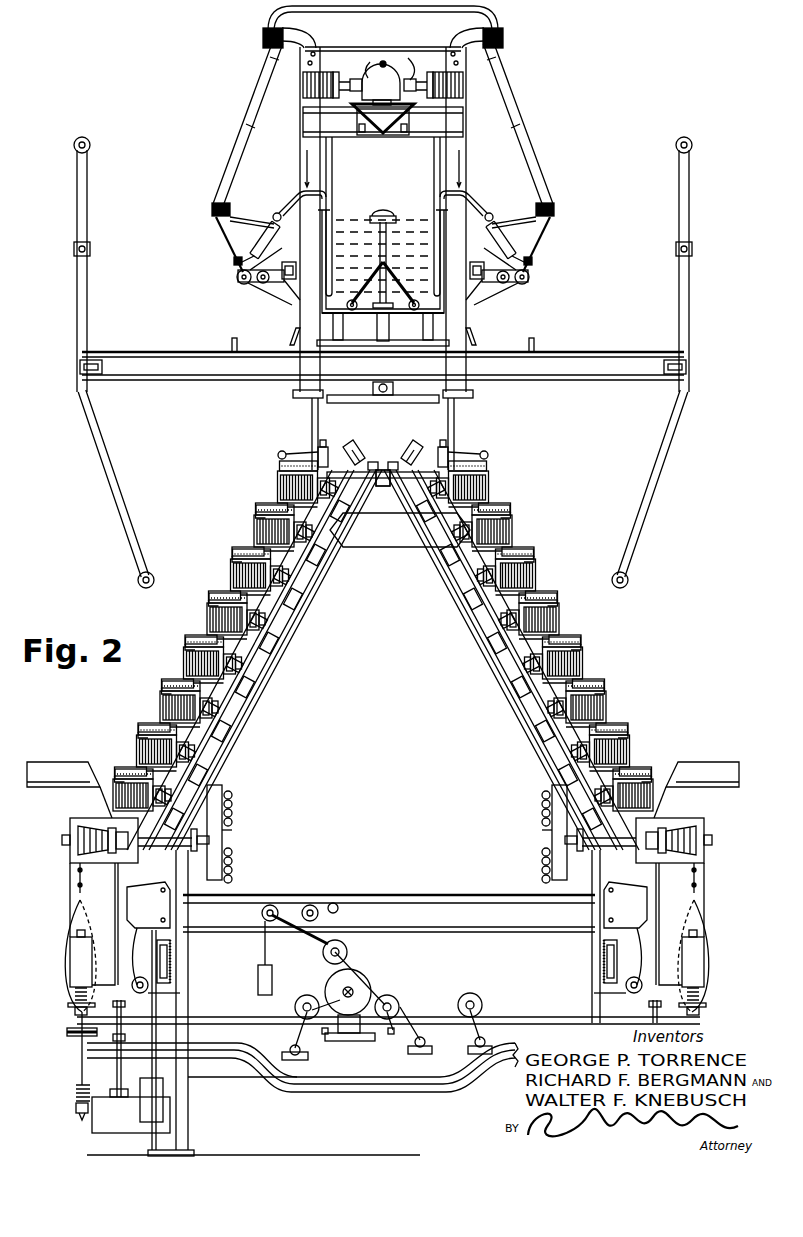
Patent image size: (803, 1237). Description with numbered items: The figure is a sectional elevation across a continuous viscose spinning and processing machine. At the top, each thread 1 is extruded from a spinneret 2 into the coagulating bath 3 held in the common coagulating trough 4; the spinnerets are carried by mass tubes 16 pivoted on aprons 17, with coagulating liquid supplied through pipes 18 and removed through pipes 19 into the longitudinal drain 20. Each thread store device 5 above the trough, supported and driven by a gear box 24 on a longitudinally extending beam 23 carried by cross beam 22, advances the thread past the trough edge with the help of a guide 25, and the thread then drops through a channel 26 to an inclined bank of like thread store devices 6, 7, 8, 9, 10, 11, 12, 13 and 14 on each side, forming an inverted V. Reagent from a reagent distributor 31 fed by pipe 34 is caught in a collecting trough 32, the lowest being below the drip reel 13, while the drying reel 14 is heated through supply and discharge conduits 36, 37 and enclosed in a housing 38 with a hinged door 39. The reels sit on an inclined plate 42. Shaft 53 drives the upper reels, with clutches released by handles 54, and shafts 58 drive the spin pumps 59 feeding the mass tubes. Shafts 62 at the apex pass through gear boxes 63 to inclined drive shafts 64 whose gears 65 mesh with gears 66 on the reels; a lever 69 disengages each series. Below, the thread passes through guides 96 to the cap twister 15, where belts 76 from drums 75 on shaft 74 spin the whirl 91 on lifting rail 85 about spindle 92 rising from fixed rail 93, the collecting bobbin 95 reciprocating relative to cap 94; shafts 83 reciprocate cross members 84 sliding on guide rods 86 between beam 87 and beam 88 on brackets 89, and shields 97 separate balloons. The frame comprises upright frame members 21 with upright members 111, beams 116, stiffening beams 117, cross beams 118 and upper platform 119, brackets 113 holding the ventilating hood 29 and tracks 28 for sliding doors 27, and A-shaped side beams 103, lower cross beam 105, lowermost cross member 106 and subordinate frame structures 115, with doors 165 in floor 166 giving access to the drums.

The thread 1 is at (707, 935).
The spinneret 2 is at (432, 290).
The coagulating bath 3 is at (350, 226).
The coagulating trough 4 is at (324, 310).
The thread store device 5 is at (463, 84).
The thread store device 6 is at (488, 488).
The thread store device 7 is at (512, 528).
The thread store device 8 is at (536, 572).
The thread store device 9 is at (558, 615).
The thread store device 10 is at (582, 660).
The thread store device 11 is at (606, 700).
The thread store device 12 is at (629, 747).
The drip reel 13 is at (656, 790).
The reel 14 is at (702, 845).
The cap twister 15 is at (704, 975).
The mass tube 16 is at (486, 210).
The apron 17 is at (513, 215).
The pipe 18 is at (412, 309).
The pipe 19 is at (388, 225).
The drain 20 is at (383, 404).
The upright frame member 21 is at (312, 418).
The cross beam 22 is at (362, 135).
The longitudinally extending beam 23 is at (402, 135).
The gear box 24 is at (381, 83).
The guide 25 is at (463, 120).
The channel 26 is at (470, 331).
The sliding door 27 is at (530, 112).
The track 28 is at (554, 207).
The ventilating hood 29 is at (381, 11).
The reagent distributor 31 is at (628, 732).
The collecting trough 32 is at (656, 765).
The pipe 34 is at (448, 452).
The supply conduit 36 is at (542, 806).
The discharge conduit 37 is at (542, 875).
The housing 38 is at (669, 880).
The hinged door 39 is at (709, 832).
The inclined plate 42 is at (486, 618).
The shaft 53 is at (383, 63).
The handle 54 is at (412, 58).
The shaft 58 is at (516, 284).
The spin pump 59 is at (524, 258).
The shaft 62 is at (414, 444).
The gear box 63 is at (373, 462).
The inclined drive shaft 64 is at (553, 743).
The gear 65 is at (516, 685).
The gear 66 is at (521, 668).
The lever 69 is at (484, 453).
The shaft 74 is at (345, 990).
The drum 75 is at (358, 978).
The belt 76 is at (570, 1017).
The shaft 83 is at (636, 975).
The cross member 84 is at (375, 1093).
The lifting rail 85 is at (67, 1032).
The guide rod 86 is at (656, 1002).
The beam 87 is at (604, 957).
The beam 88 is at (108, 1098).
The bracket 89 is at (94, 1130).
The whirl 91 is at (704, 1008).
The spindle 92 is at (76, 1090).
The fixed rail 93 is at (76, 1108).
The cap 94 is at (704, 960).
The collecting bobbin 95 is at (704, 996).
The guide 96 is at (694, 870).
The shield 97 is at (709, 925).
The side beam 103 is at (592, 975).
The lower cross beam 105 is at (418, 893).
The lowermost cross member 106 is at (225, 1079).
The upright member 111 is at (466, 147).
The bracket 113 is at (450, 35).
The subordinate frame structure 115 is at (310, 1062).
The beam 116 is at (434, 347).
The stiffening beam 117 is at (475, 393).
The cross beam 118 is at (605, 380).
The upper platform 119 is at (625, 352).
The door 165 is at (376, 893).
The floor 166 is at (480, 893).